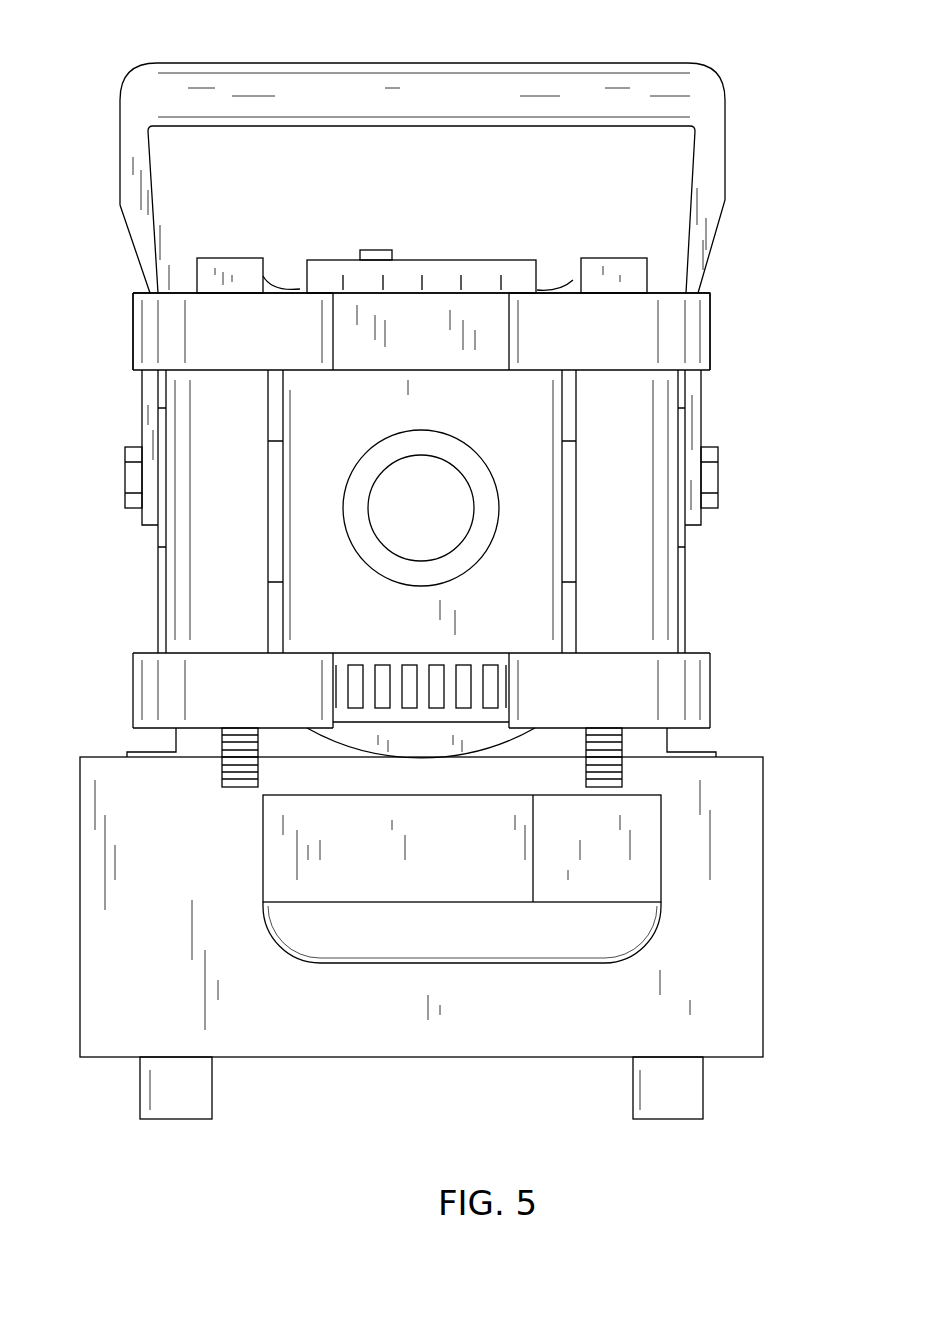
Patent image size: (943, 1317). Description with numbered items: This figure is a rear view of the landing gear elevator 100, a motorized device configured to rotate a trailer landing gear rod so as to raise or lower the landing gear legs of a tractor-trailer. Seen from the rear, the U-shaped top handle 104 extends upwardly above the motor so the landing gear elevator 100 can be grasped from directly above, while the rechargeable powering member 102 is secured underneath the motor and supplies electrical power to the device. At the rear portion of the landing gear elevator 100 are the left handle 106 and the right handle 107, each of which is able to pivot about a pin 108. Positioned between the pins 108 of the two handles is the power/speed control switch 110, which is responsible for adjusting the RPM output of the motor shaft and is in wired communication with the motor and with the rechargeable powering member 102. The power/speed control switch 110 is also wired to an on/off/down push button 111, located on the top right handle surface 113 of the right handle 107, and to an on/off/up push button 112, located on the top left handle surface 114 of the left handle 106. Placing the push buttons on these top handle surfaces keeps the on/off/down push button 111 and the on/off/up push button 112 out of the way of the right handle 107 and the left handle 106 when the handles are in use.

The landing gear elevator 100 is at (766, 218).
The rechargeable powering member 102 is at (305, 1045).
The top handle 104 is at (257, 78).
The left handle 106 is at (190, 415).
The right handle 107 is at (635, 422).
The pin 108 is at (270, 290).
The power/speed control switch 110 is at (325, 258).
The on/off/down push button 111 is at (610, 258).
The on/off/up push button 112 is at (220, 258).
The top right handle surface 113 is at (665, 293).
The top left handle surface 114 is at (167, 293).